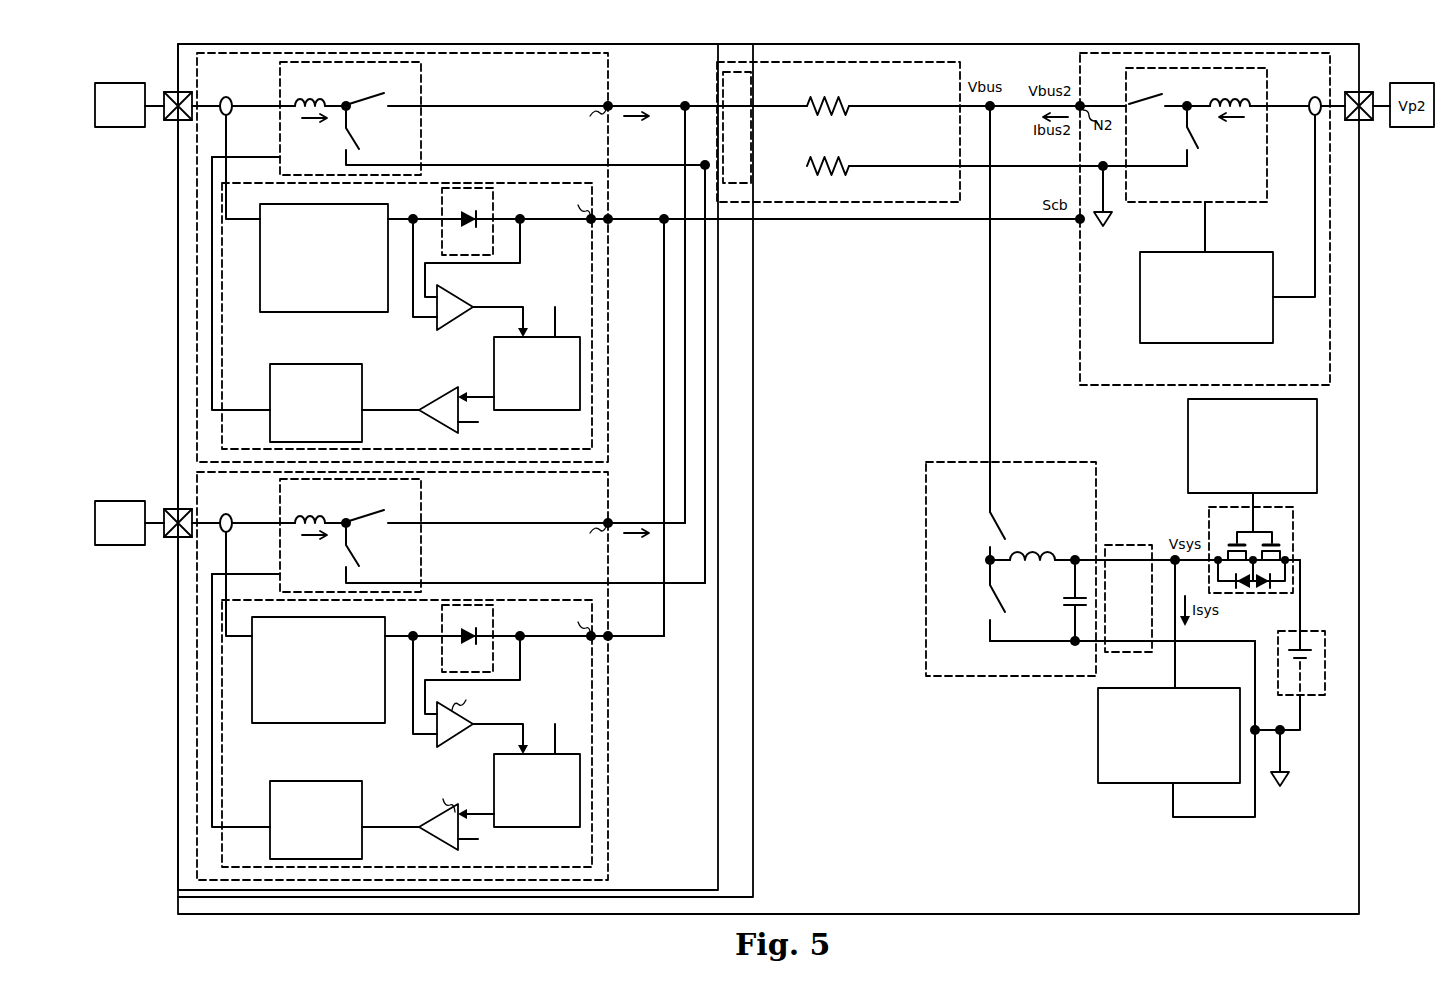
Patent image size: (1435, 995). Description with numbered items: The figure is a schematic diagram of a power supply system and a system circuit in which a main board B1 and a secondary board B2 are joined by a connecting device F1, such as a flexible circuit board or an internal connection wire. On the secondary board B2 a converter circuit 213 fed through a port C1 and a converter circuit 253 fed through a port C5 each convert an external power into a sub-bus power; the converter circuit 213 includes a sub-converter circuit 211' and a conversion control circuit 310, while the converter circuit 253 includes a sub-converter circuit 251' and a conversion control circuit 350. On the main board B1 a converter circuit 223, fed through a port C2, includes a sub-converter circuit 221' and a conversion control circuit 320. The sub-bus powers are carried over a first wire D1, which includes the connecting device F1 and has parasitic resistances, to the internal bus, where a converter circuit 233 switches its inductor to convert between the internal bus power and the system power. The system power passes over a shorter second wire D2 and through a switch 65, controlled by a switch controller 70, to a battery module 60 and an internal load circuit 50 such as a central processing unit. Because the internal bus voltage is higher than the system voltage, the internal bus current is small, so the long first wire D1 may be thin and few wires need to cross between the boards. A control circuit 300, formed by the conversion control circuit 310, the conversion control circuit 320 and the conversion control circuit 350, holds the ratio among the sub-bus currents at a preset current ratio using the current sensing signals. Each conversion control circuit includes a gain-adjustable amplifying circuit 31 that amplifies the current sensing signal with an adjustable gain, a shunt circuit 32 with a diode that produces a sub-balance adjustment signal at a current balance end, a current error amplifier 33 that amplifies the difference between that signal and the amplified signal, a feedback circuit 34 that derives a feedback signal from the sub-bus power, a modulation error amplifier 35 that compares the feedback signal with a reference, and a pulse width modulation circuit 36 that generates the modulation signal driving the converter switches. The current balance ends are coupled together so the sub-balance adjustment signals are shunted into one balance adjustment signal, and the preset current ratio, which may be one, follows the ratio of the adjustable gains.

The gain-adjustable amplifying circuit 31 is at (324, 258).
The shunt circuit 32 is at (467, 221).
The current error amplifier 33 is at (452, 293).
The feedback circuit 34 is at (537, 373).
The modulation error amplifier 35 is at (455, 395).
The pulse width modulation circuit 36 is at (316, 403).
The internal load circuit 50 is at (1169, 735).
The battery module 60 is at (1288, 642).
The switch 65 is at (1254, 543).
The switch controller 70 is at (1252, 446).
The sub-converter circuit 211' is at (458, 118).
The converter circuit 213 is at (587, 254).
The sub-converter circuit 221' is at (1217, 160).
The converter circuit 223 is at (1205, 219).
The converter circuit 233 is at (1055, 462).
The sub-converter circuit 251' is at (458, 535).
The converter circuit 253 is at (400, 672).
The control circuit 300 is at (872, 838).
The conversion control circuit 310 is at (646, 303).
The conversion control circuit 320 is at (1206, 297).
The conversion control circuit 350 is at (438, 720).
The main board B1 is at (1340, 891).
The secondary board B2 is at (448, 467).
The port C1 is at (184, 86).
The port C2 is at (1371, 90).
The port C5 is at (184, 504).
The first wire D1 is at (952, 132).
The second wire D2 is at (1120, 541).
The connecting device F1 is at (737, 127).